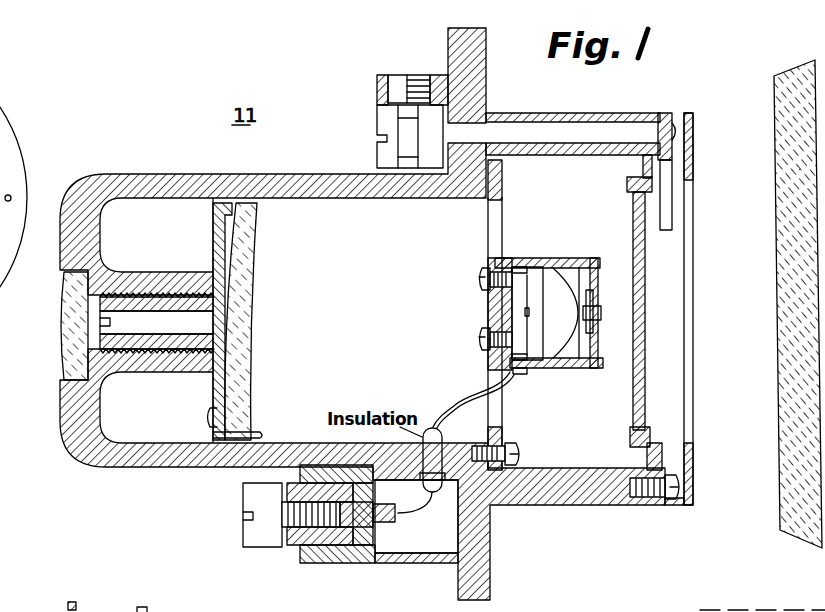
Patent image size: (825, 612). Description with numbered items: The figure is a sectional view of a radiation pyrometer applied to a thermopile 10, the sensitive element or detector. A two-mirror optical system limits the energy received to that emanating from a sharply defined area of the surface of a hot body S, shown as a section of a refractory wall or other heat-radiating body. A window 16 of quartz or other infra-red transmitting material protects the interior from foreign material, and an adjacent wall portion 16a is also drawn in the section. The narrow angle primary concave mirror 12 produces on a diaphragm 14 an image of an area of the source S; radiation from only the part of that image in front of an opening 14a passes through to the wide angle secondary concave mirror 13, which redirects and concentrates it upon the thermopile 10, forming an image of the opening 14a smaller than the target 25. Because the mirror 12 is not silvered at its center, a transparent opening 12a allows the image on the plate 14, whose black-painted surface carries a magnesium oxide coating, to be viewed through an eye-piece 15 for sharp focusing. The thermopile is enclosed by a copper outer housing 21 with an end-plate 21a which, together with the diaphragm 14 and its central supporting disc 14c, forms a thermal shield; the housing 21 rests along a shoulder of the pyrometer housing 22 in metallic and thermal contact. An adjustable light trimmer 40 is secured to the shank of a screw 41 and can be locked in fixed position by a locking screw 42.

The thermopile 10 is at (528, 295).
The concave mirror 12 is at (243, 275).
The transparent opening 12a is at (235, 318).
The concave mirror 13 is at (568, 358).
The diaphragm 14 is at (485, 202).
The opening 14a is at (490, 315).
The central supporting disc 14c is at (492, 365).
The eye-piece 15 is at (73, 357).
The window 16 is at (148, 611).
The inner casing wall 16a is at (630, 260).
The outer housing 21 is at (523, 258).
The end-plate 21a is at (598, 347).
The pyrometer housing 22 is at (310, 174).
The target 25 is at (530, 312).
The adjustable light trimmer 40 is at (667, 217).
The screw 41 is at (383, 123).
The locking screw 42 is at (397, 82).
The hot body S is at (783, 422).